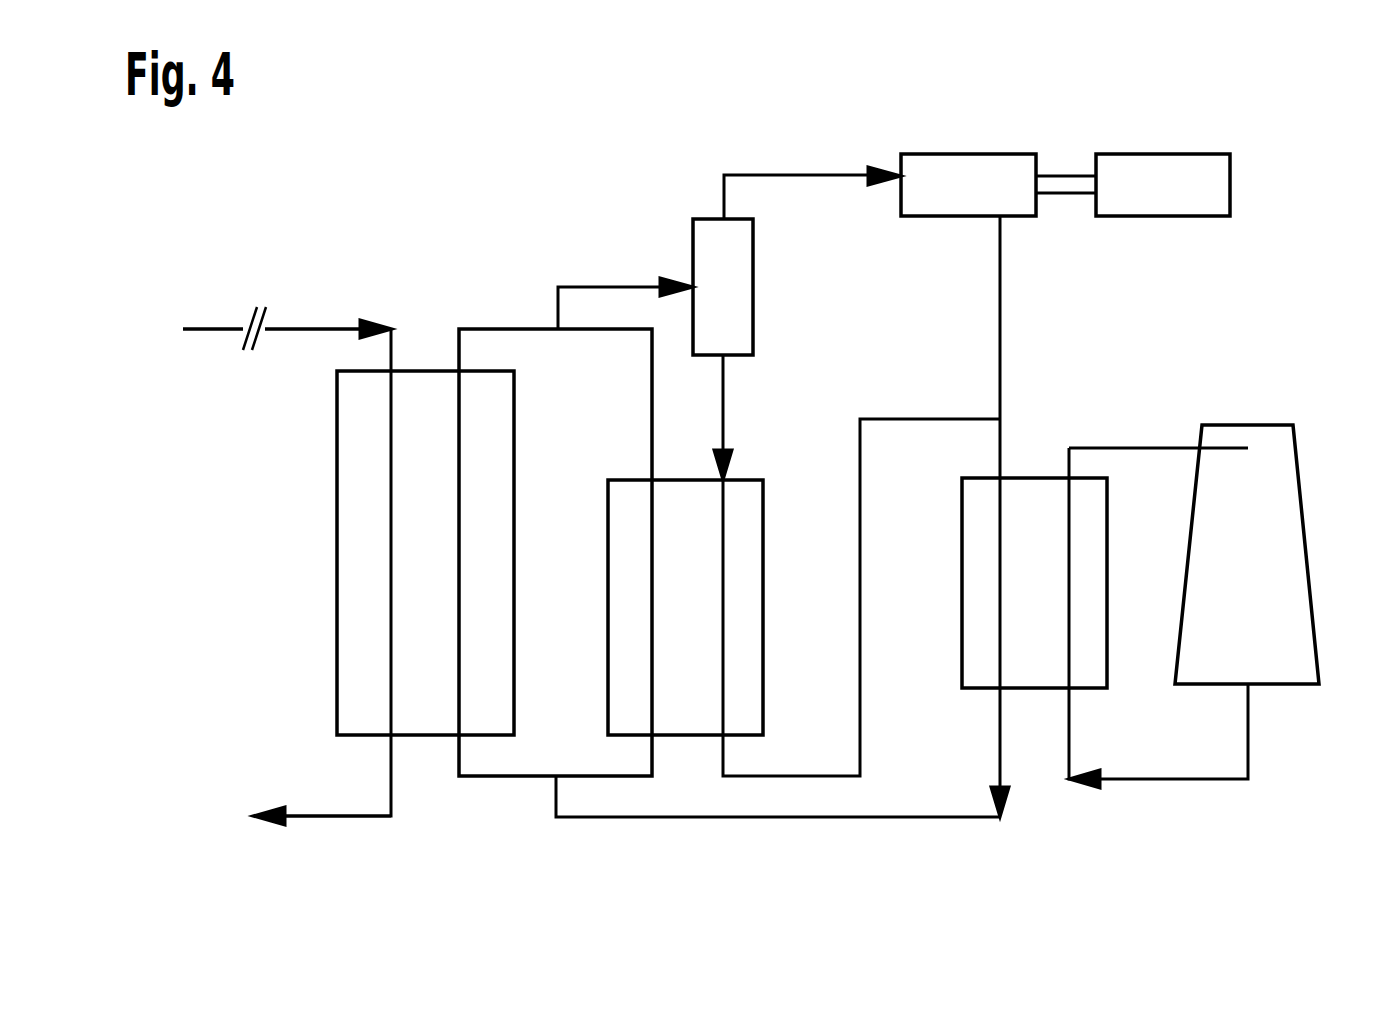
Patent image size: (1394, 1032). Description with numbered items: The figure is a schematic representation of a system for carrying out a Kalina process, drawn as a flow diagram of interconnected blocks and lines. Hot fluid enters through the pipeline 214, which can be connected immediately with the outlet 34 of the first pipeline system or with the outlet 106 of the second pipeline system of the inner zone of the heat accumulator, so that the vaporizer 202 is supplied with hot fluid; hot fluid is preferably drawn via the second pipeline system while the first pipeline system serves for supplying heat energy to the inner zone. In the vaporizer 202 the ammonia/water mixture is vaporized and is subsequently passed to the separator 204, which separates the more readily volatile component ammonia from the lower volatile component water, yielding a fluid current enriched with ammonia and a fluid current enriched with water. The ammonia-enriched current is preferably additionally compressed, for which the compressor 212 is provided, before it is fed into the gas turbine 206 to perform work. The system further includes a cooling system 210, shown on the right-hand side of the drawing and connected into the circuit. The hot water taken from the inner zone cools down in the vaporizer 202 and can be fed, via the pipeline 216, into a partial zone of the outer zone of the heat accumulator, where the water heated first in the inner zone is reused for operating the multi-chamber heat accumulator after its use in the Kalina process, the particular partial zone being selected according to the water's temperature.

The outlet of the second pipeline system 106 is at (197, 327).
The outlet of the first pipeline system 34 is at (197, 327).
The pipeline 214 is at (305, 327).
The vaporizer 202 is at (430, 718).
The separator 204 is at (703, 253).
The gas turbine 206 is at (968, 170).
The cooling system 210 is at (1286, 518).
The compressor 212 is at (782, 500).
The pipeline 216 is at (325, 822).